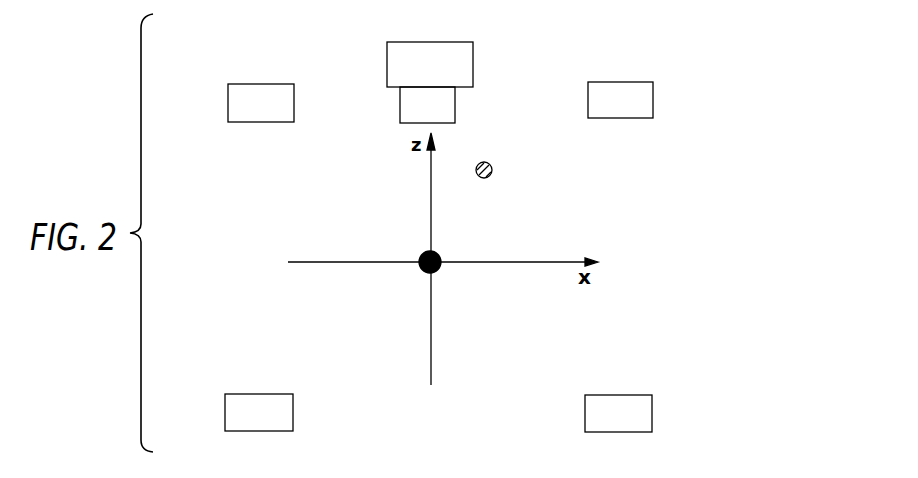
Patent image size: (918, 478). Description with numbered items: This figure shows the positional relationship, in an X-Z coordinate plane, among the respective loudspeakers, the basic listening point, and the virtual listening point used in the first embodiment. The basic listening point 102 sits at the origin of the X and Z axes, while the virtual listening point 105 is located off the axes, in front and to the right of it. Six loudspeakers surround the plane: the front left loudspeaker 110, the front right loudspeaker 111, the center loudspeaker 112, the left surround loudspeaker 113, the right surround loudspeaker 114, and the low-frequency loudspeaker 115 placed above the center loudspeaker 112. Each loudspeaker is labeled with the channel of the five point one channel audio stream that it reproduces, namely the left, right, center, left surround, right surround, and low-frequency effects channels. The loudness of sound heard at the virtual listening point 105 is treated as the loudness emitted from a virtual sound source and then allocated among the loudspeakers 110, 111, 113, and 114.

The basic listening point 102 is at (433, 272).
The virtual listening point 105 is at (490, 177).
The loudspeaker 110 is at (237, 122).
The loudspeaker 111 is at (620, 118).
The loudspeaker 112 is at (399, 99).
The loudspeaker 113 is at (263, 394).
The loudspeaker 114 is at (625, 395).
The loudspeaker 115 is at (473, 67).